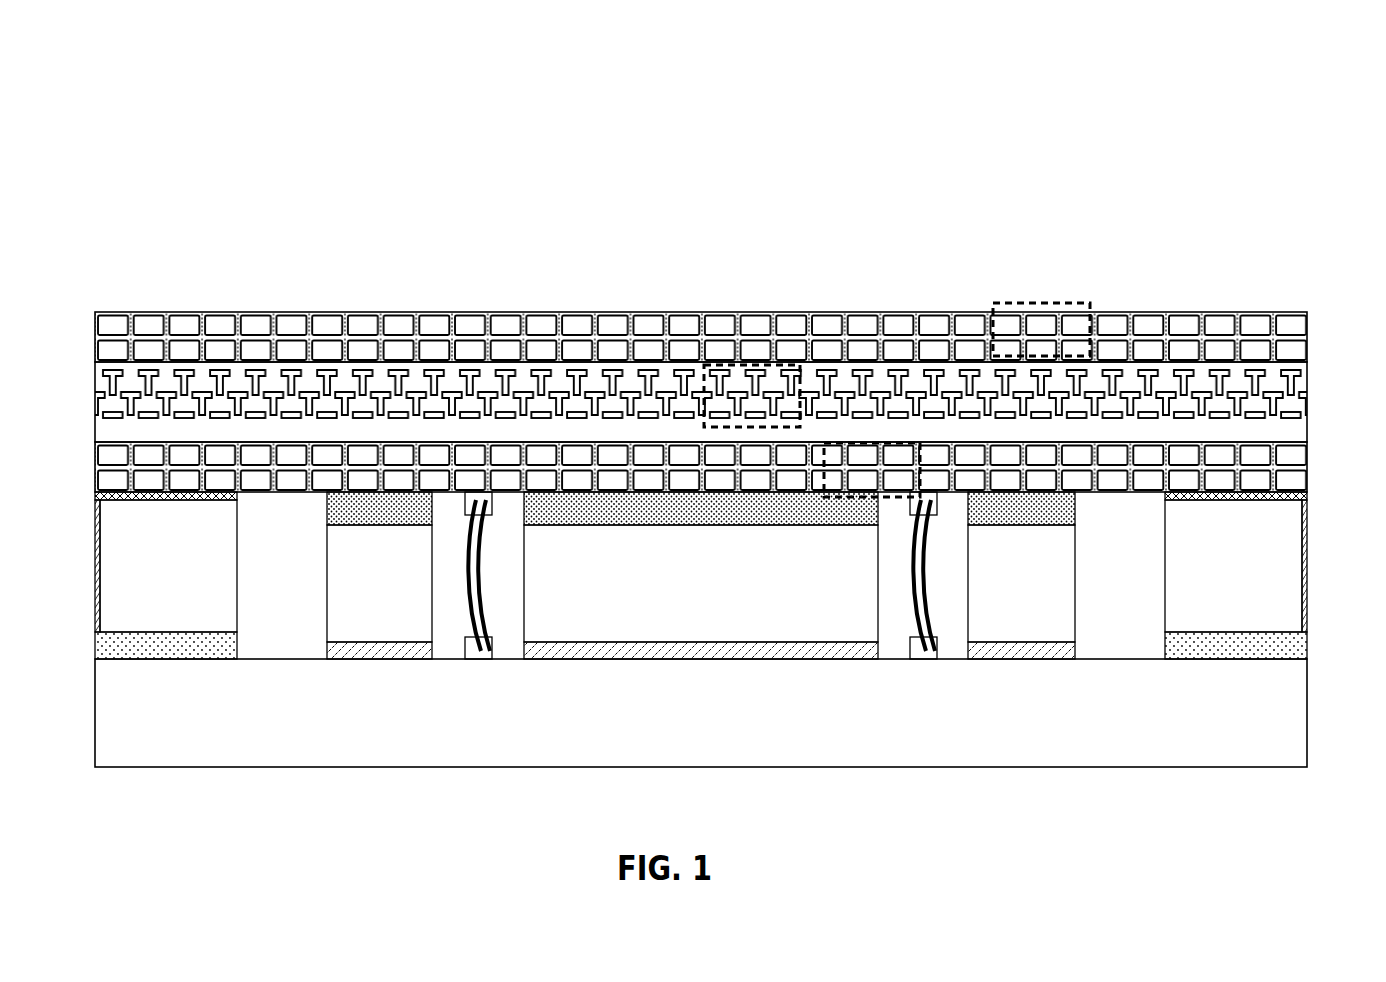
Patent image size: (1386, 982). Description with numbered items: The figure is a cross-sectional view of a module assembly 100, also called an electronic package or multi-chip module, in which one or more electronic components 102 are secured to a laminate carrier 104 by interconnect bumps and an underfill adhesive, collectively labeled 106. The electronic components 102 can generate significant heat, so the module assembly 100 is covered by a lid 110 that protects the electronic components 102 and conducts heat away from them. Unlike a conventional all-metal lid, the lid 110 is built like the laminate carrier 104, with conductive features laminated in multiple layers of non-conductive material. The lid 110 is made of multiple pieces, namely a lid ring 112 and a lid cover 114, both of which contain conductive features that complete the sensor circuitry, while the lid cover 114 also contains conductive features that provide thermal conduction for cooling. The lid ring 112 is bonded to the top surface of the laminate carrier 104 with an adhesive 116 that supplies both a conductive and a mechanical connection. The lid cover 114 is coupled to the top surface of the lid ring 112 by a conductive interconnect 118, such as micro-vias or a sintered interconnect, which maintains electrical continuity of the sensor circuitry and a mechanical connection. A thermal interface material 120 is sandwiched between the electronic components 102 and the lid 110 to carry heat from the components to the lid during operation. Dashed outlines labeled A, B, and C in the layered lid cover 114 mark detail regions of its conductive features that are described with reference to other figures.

The module assembly 100 is at (130, 84).
The electronic components 102 is at (400, 592).
The laminate carrier 104 is at (720, 727).
The interconnect bumps and underfill adhesive 106 is at (986, 785).
The lid 110 is at (1273, 277).
The lid ring 112 is at (188, 575).
The lid cover 114 is at (83, 312).
The adhesive 116 is at (125, 645).
The conductive interconnect 118 is at (100, 496).
The thermal interface material 120 is at (400, 521).
The detail region A is at (718, 362).
The detail region B is at (1028, 301).
The detail region C is at (846, 441).